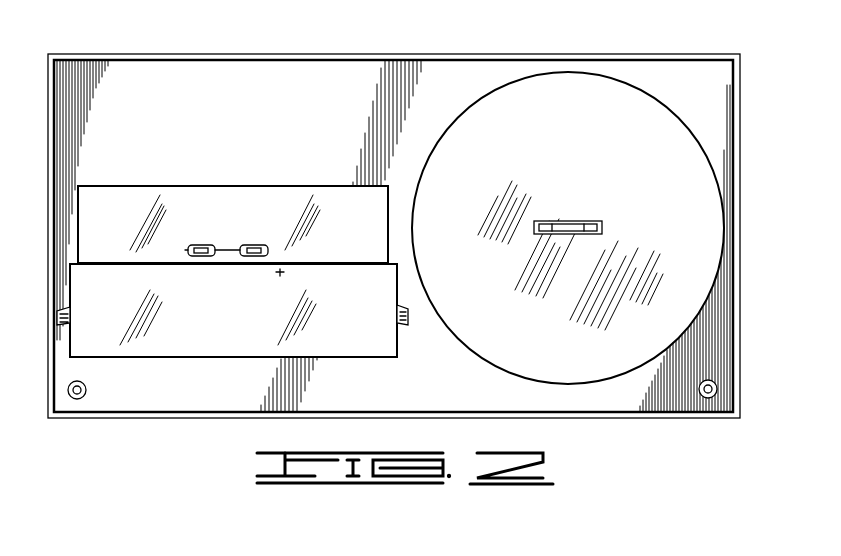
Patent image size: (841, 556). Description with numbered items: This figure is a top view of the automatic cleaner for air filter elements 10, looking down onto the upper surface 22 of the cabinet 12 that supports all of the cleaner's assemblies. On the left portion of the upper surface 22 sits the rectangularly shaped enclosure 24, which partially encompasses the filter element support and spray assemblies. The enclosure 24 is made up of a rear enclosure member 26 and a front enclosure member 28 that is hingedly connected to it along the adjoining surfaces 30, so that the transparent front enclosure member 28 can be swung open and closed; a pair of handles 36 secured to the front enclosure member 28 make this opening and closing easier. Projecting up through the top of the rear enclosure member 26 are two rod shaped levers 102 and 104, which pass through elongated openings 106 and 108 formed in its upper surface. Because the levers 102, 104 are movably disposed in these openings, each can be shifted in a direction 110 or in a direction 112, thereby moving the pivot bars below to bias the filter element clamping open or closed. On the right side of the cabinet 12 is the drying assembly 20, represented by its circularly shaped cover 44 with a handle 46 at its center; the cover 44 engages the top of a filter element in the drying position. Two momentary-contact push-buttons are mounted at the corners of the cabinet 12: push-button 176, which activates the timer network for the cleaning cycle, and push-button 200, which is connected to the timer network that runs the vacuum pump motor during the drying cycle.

The automatic cleaner for air filter elements 10 is at (392, 48).
The cabinet 12 is at (620, 402).
The drying assembly 20 is at (704, 86).
The upper surface 22 is at (183, 78).
The enclosure 24 is at (311, 188).
The rear enclosure member 26 is at (388, 205).
The front enclosure member 28 is at (366, 358).
The adjoining surfaces 30 is at (356, 262).
The handles 36 is at (70, 312).
The cover 44 is at (590, 80).
The handle 46 is at (572, 225).
The lever 102 is at (185, 250).
The lever 104 is at (270, 255).
The elongated opening 106 is at (229, 246).
The elongated opening 108 is at (245, 258).
The direction 110 is at (200, 272).
The direction 112 is at (194, 234).
The push-button 176 is at (78, 400).
The push-button 200 is at (718, 389).